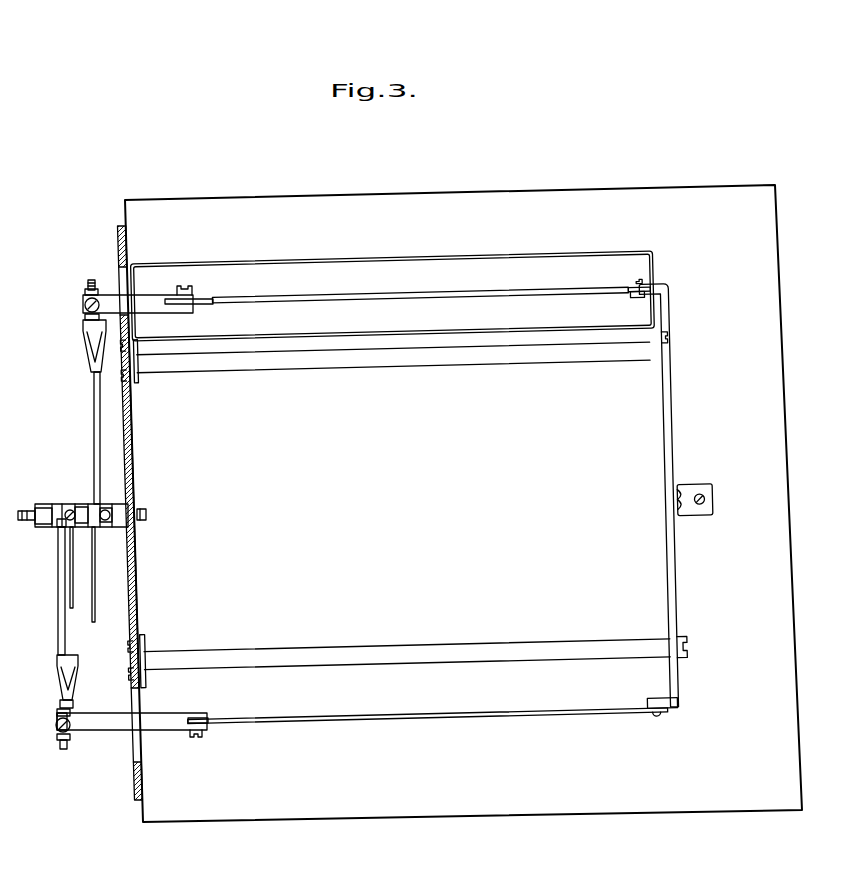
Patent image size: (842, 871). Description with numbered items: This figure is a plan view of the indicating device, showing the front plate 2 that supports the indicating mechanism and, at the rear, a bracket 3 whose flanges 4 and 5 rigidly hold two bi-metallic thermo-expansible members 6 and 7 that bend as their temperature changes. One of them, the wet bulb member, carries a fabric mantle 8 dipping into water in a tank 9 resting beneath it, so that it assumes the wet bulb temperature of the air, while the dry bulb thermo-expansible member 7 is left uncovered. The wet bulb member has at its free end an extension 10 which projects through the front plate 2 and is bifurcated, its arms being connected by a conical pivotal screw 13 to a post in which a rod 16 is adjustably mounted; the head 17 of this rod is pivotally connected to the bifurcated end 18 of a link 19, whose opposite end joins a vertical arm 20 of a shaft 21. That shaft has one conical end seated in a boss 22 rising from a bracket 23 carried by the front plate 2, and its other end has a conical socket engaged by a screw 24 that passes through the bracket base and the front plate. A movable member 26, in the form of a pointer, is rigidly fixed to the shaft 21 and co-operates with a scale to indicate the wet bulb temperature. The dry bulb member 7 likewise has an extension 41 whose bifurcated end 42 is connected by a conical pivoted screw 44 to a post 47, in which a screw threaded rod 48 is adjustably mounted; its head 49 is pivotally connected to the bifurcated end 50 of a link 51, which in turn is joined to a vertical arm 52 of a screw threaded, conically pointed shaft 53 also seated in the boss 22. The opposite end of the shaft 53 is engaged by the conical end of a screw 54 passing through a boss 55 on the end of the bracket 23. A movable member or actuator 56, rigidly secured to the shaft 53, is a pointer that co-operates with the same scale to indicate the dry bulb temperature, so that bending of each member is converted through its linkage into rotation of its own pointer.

The front plate 2 is at (135, 782).
The bracket 3 is at (684, 489).
The flange 4 is at (657, 298).
The flange 5 is at (651, 700).
The thermo-expansible member 6 is at (625, 300).
The dry bulb thermo-expansible member 7 is at (519, 725).
The mantle 8 is at (485, 296).
The tank 9 is at (588, 270).
The extension 10 is at (152, 300).
The conical pivotal screw 13 is at (97, 300).
The rod 16 is at (88, 284).
The head 17 is at (84, 325).
The bifurcated end 18 is at (88, 357).
The link 19 is at (93, 383).
The vertical arm 20 is at (104, 505).
The shaft 21 is at (108, 524).
The boss 22 is at (82, 505).
The bracket 23 is at (92, 505).
The screw 24 is at (147, 512).
The movable member 26 is at (96, 600).
The extension 41 is at (170, 733).
The bifurcated end 42 is at (78, 732).
The conical pivoted screw 44 is at (70, 722).
The post 47 is at (57, 713).
The screw threaded rod 48 is at (62, 747).
The head 49 is at (59, 702).
The bifurcated end 50 is at (59, 680).
The link 51 is at (58, 603).
The vertical arm 52 is at (60, 527).
The shaft 53 is at (52, 523).
The screw 54 is at (25, 511).
The boss 55 is at (42, 508).
The movable member 56 is at (74, 606).